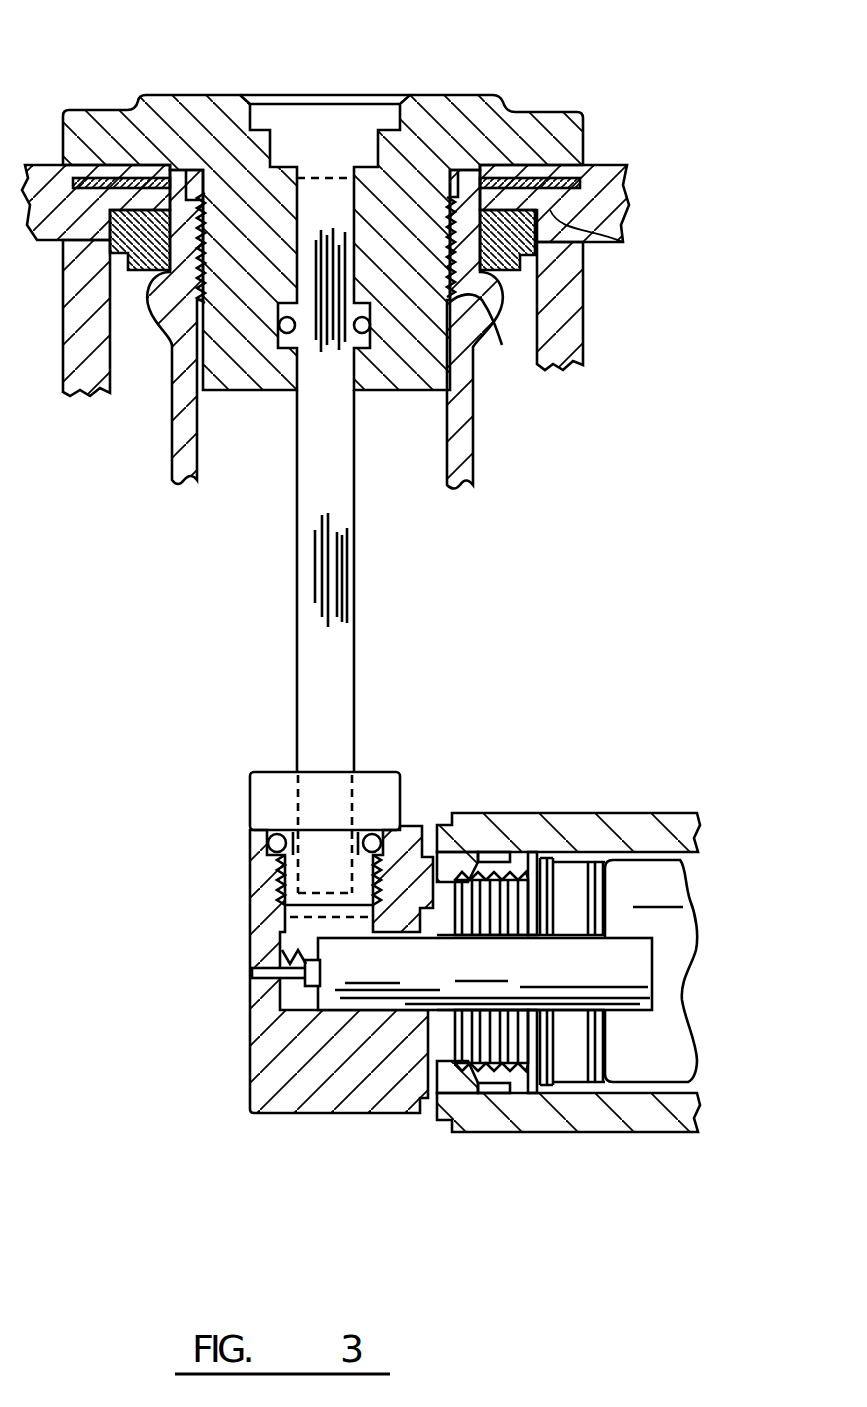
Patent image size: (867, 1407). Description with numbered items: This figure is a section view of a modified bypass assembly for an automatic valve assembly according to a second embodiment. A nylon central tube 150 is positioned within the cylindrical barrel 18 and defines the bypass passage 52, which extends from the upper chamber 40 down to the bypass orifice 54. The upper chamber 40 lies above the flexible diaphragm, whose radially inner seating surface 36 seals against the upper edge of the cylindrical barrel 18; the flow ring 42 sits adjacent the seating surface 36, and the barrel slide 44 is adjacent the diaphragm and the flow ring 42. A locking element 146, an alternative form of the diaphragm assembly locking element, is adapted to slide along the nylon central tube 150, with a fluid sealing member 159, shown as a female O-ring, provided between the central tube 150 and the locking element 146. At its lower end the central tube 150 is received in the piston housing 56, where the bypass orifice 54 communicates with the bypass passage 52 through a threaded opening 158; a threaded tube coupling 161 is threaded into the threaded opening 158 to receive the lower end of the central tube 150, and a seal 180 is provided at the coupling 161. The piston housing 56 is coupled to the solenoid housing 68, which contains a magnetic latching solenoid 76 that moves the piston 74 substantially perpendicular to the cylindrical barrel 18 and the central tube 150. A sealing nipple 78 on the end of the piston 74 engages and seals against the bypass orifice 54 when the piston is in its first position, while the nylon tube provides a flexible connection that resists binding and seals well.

The cylindrical barrel 18 is at (588, 330).
The seating surface 36 is at (613, 221).
The upper chamber 40 is at (425, 59).
The flow ring 42 is at (537, 262).
The barrel slide 44 is at (476, 447).
The bypass passage 52 is at (322, 178).
The bypass orifice 54 is at (282, 948).
The piston housing 56 is at (306, 1097).
The solenoid housing 68 is at (590, 813).
The piston 74 is at (485, 974).
The magnetic latching solenoid 76 is at (651, 971).
The sealing nipple 78 is at (262, 935).
The locking element 146 is at (195, 385).
The central tube 150 is at (357, 653).
The threaded opening 158 is at (277, 897).
The fluid sealing member 159 is at (458, 388).
The threaded tube coupling 161 is at (262, 803).
The seal 180 is at (270, 845).